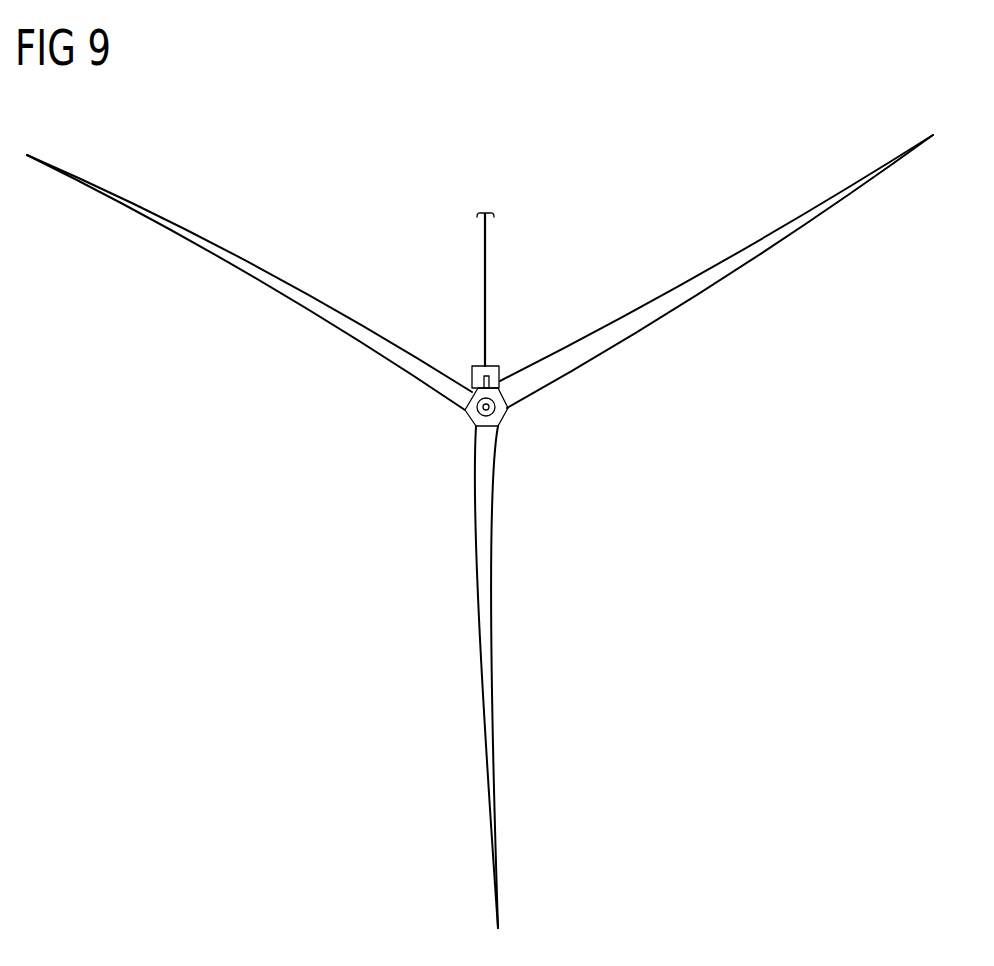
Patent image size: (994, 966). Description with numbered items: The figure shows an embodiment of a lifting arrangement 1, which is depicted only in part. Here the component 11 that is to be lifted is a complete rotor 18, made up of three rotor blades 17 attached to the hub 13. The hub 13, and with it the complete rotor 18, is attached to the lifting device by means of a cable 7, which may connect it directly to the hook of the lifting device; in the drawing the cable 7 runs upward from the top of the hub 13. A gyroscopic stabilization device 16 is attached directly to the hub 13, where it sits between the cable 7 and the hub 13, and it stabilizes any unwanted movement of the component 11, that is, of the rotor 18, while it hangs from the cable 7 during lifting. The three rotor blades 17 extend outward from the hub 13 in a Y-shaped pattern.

The lifting arrangement 1 is at (645, 149).
The cable 7 is at (488, 251).
The component 11 is at (552, 444).
The hub 13 is at (463, 420).
The gyroscopic stabilization device 16 is at (493, 366).
The rotor blades 17 is at (283, 277).
The rotor 18 is at (335, 384).